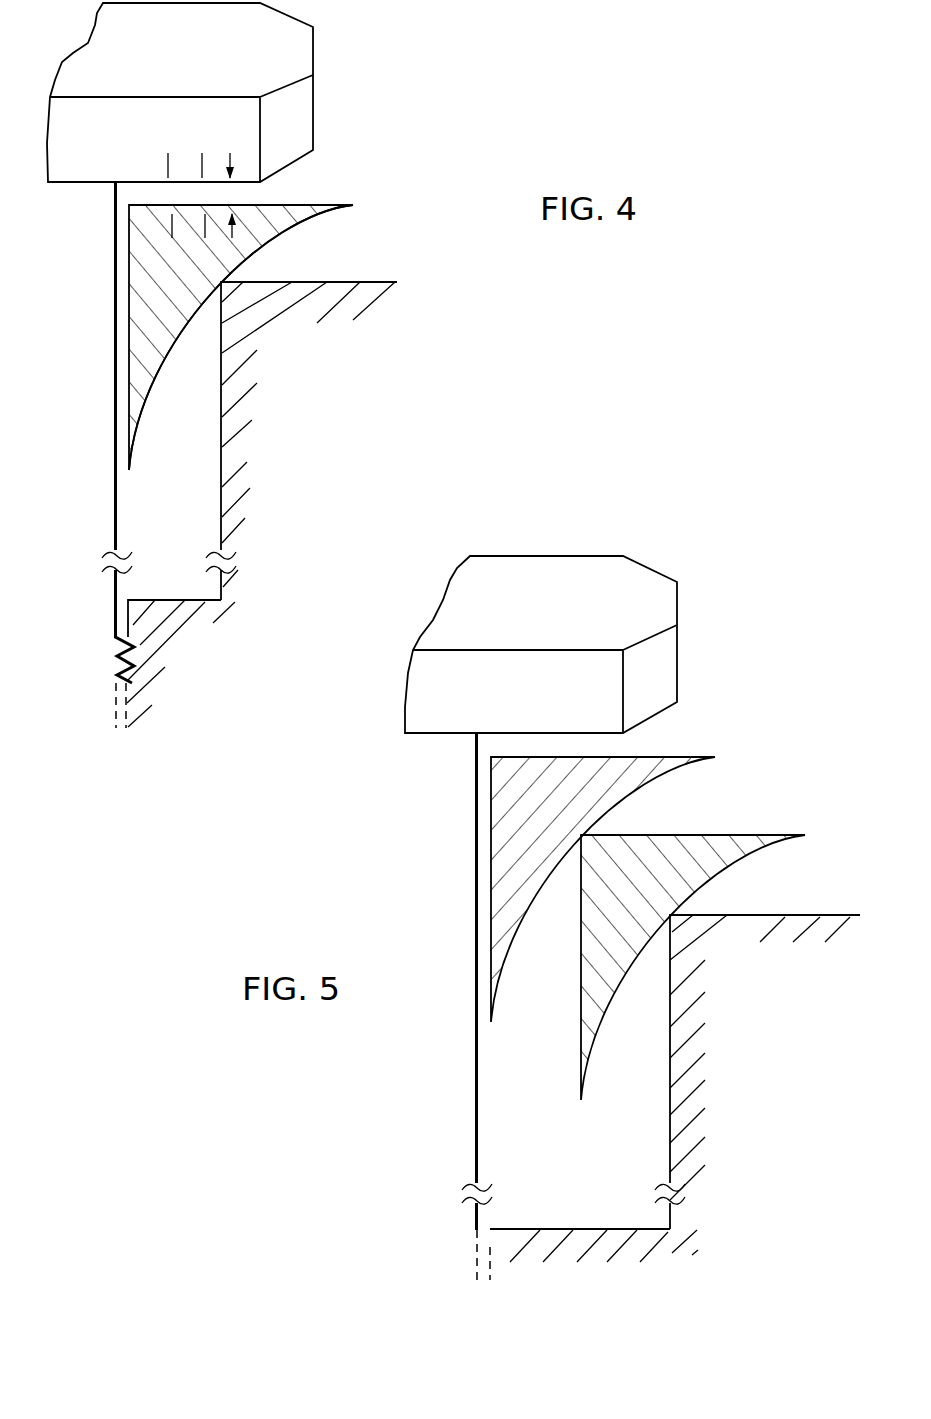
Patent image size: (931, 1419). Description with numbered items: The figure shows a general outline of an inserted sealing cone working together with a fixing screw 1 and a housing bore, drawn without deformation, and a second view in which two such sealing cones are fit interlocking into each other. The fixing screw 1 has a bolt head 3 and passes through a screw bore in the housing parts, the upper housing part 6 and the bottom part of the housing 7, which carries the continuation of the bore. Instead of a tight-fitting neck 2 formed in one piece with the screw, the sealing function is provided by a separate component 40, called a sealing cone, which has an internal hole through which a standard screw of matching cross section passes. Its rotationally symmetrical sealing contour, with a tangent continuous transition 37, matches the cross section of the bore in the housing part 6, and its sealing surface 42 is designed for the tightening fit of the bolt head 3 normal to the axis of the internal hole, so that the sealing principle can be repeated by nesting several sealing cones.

In FIG. 4, the fixing screw 1 is at (325, 109).
In FIG. 5, the fixing screw 1 is at (685, 656).
In FIG. 4, the tight-fitting neck 2 is at (158, 362).
In FIG. 5, the tight-fitting neck 2 is at (477, 1006).
In FIG. 4, the bolt head 3 is at (173, 61).
In FIG. 5, the bolt head 3 is at (558, 609).
In FIG. 4, the housing part 6 is at (332, 416).
In FIG. 5, the housing part 6 is at (790, 1042).
In FIG. 4, the bottom part of the housing 7 is at (209, 669).
In FIG. 5, the bottom part of the housing 7 is at (596, 1302).
In FIG. 4, the tangent continuous transition 37 is at (293, 237).
In FIG. 4, the separate component 40 is at (153, 415).
In FIG. 5, the separate component 40 is at (663, 785).
In FIG. 4, the sealing surface 42 is at (227, 205).